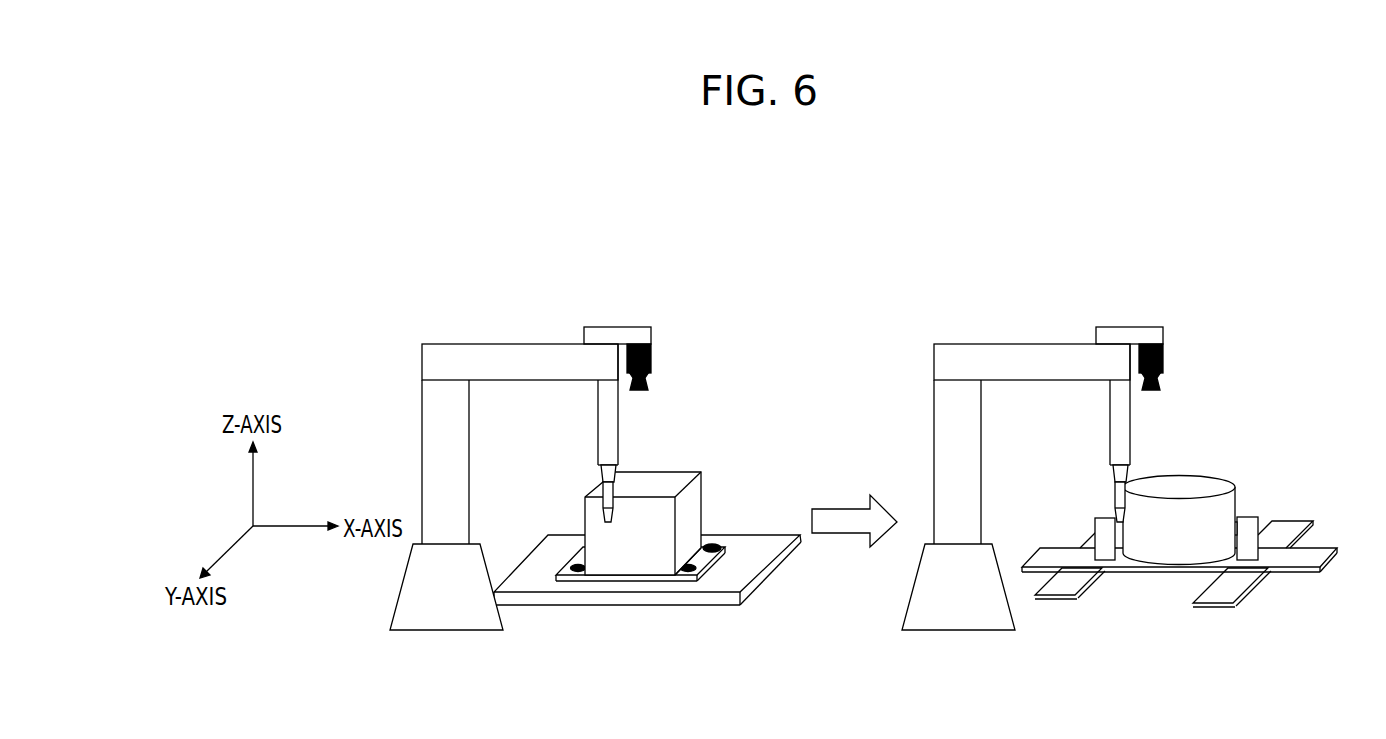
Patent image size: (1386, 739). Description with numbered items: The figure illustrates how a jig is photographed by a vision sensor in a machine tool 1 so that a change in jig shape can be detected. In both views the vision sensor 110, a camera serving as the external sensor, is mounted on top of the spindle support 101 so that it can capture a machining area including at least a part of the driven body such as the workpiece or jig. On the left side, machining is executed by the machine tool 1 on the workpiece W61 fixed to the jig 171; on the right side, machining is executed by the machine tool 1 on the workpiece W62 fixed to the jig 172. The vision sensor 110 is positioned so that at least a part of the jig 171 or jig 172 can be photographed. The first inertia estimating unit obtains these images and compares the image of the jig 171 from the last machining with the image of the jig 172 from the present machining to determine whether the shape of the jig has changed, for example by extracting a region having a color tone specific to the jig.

The machine tool 1 is at (815, 419).
The spindle support 101 is at (533, 344).
The vision sensor 110 is at (652, 356).
The workpiece W61 is at (683, 471).
The jig 171 is at (700, 605).
The workpiece W62 is at (1197, 470).
The jig 172 is at (1215, 605).